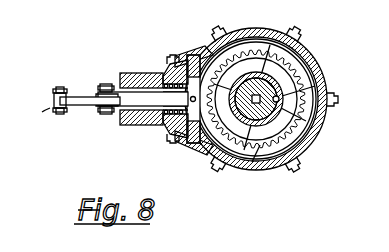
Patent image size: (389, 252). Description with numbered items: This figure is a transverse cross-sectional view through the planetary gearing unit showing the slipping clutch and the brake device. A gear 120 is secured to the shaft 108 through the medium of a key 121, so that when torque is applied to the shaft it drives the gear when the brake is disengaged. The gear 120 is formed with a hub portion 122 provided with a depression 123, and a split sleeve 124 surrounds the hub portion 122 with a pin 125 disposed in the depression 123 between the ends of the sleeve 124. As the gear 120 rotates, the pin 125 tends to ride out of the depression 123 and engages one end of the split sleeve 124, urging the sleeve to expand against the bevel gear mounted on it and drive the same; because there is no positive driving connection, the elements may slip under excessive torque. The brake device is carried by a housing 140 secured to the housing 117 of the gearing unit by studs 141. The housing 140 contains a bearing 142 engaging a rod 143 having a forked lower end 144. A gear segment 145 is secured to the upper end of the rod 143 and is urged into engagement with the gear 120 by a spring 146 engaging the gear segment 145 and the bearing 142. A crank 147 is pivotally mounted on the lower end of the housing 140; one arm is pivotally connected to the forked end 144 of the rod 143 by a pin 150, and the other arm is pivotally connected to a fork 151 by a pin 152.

The shaft 108 is at (256, 162).
The housing 117 is at (210, 150).
The gear 120 is at (257, 95).
The key 121 is at (280, 42).
The hub portion 122 is at (328, 98).
The depression 123 is at (312, 60).
The split sleeve 124 is at (298, 40).
The pin 125 is at (314, 72).
The housing 140 is at (165, 128).
The studs 141 is at (187, 138).
The bearing 142 is at (148, 73).
The rod 143 is at (120, 124).
The forked lower end 144 is at (118, 78).
The gear segment 145 is at (206, 48).
The spring 146 is at (182, 53).
The crank 147 is at (78, 106).
The pin 150 is at (107, 86).
The fork 151 is at (42, 112).
The pin 152 is at (62, 87).